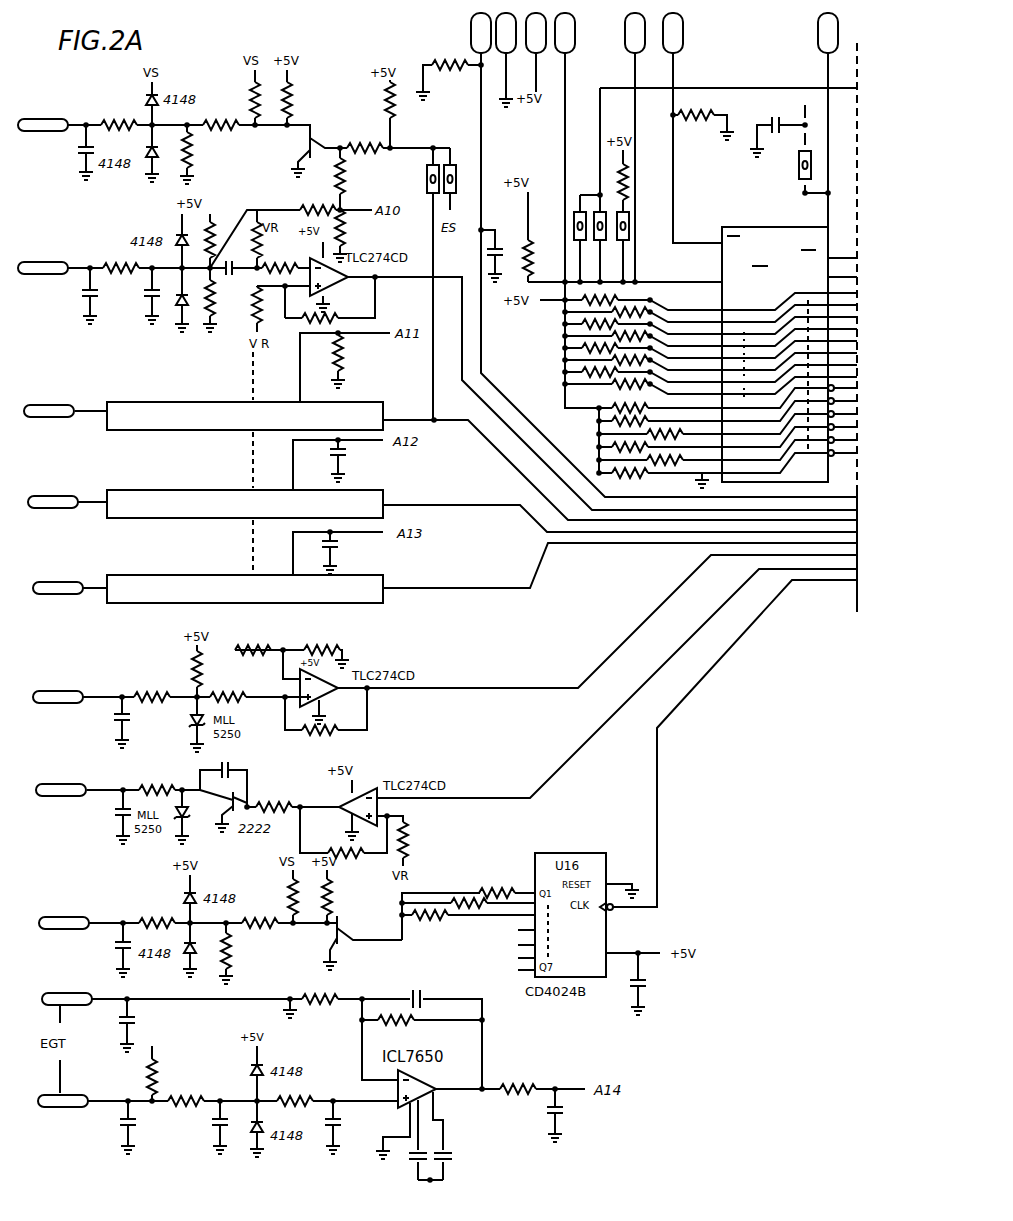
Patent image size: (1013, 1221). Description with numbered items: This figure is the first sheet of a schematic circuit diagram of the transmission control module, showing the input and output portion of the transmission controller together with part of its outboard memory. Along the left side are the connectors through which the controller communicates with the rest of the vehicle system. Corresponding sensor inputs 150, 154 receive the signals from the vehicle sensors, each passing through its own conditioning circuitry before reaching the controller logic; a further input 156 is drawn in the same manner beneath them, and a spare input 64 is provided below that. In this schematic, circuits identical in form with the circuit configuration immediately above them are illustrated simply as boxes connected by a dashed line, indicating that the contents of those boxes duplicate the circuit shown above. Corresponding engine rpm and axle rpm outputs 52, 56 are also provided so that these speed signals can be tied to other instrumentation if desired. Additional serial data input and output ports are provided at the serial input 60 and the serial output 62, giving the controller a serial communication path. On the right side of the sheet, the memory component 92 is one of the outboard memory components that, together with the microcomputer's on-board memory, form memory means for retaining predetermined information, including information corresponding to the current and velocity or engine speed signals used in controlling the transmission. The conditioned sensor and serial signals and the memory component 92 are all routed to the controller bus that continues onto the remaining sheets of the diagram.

The engine rpm output 52 is at (40, 133).
The sensor input 154 is at (42, 276).
The sensor input 150 is at (42, 419).
The ground speed input connector 156 is at (48, 510).
The spare input 64 is at (52, 596).
The serial data input port 60 is at (48, 705).
The serial data output port 62 is at (50, 798).
The axle rpm output 56 is at (52, 931).
The memory component 92 is at (730, 180).